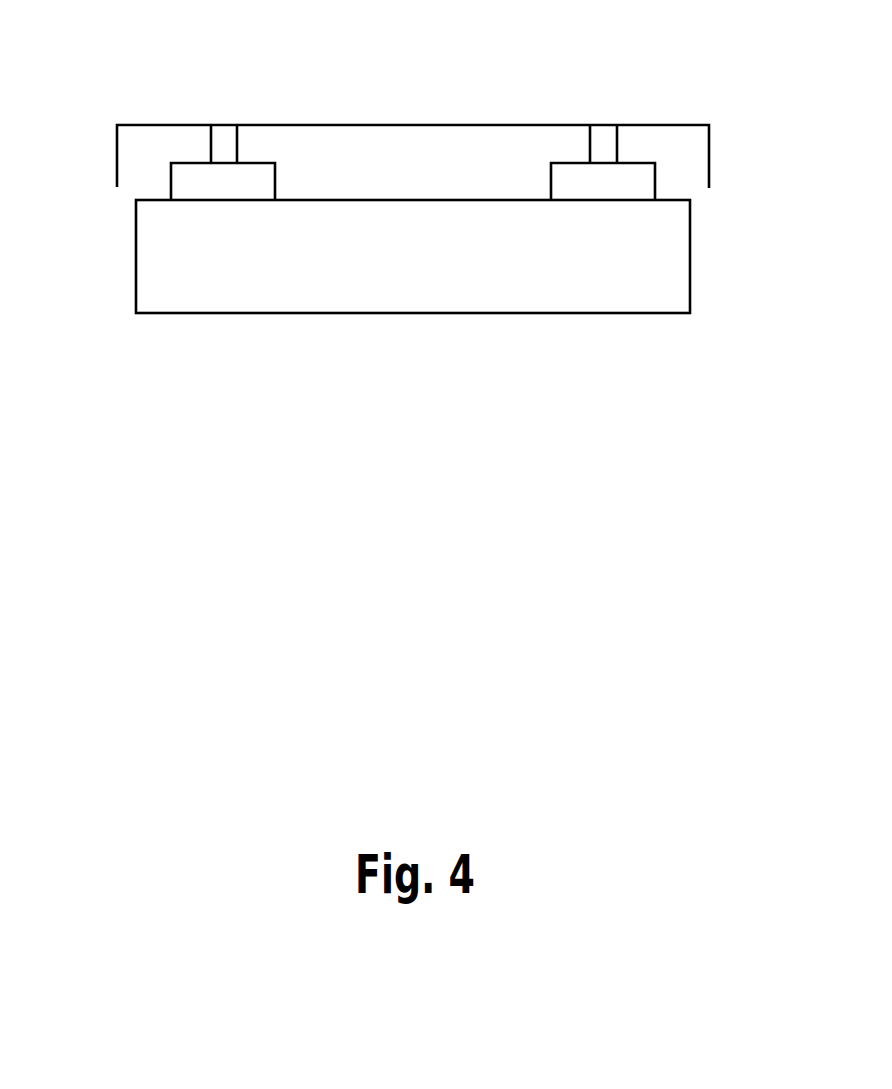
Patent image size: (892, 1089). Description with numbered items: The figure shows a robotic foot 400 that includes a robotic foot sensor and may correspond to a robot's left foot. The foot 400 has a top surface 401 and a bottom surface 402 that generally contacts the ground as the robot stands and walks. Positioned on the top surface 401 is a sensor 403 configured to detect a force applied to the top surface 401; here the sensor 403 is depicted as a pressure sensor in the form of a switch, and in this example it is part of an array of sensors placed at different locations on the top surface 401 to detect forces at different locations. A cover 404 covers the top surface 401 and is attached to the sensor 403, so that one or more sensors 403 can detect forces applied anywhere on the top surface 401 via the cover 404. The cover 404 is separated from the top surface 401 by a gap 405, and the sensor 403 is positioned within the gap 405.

The robotic foot 400 is at (189, 60).
The top surface 401 is at (430, 200).
The bottom surface 402 is at (325, 313).
The sensor 403 is at (171, 173).
The cover 404 is at (457, 125).
The gap 405 is at (372, 165).